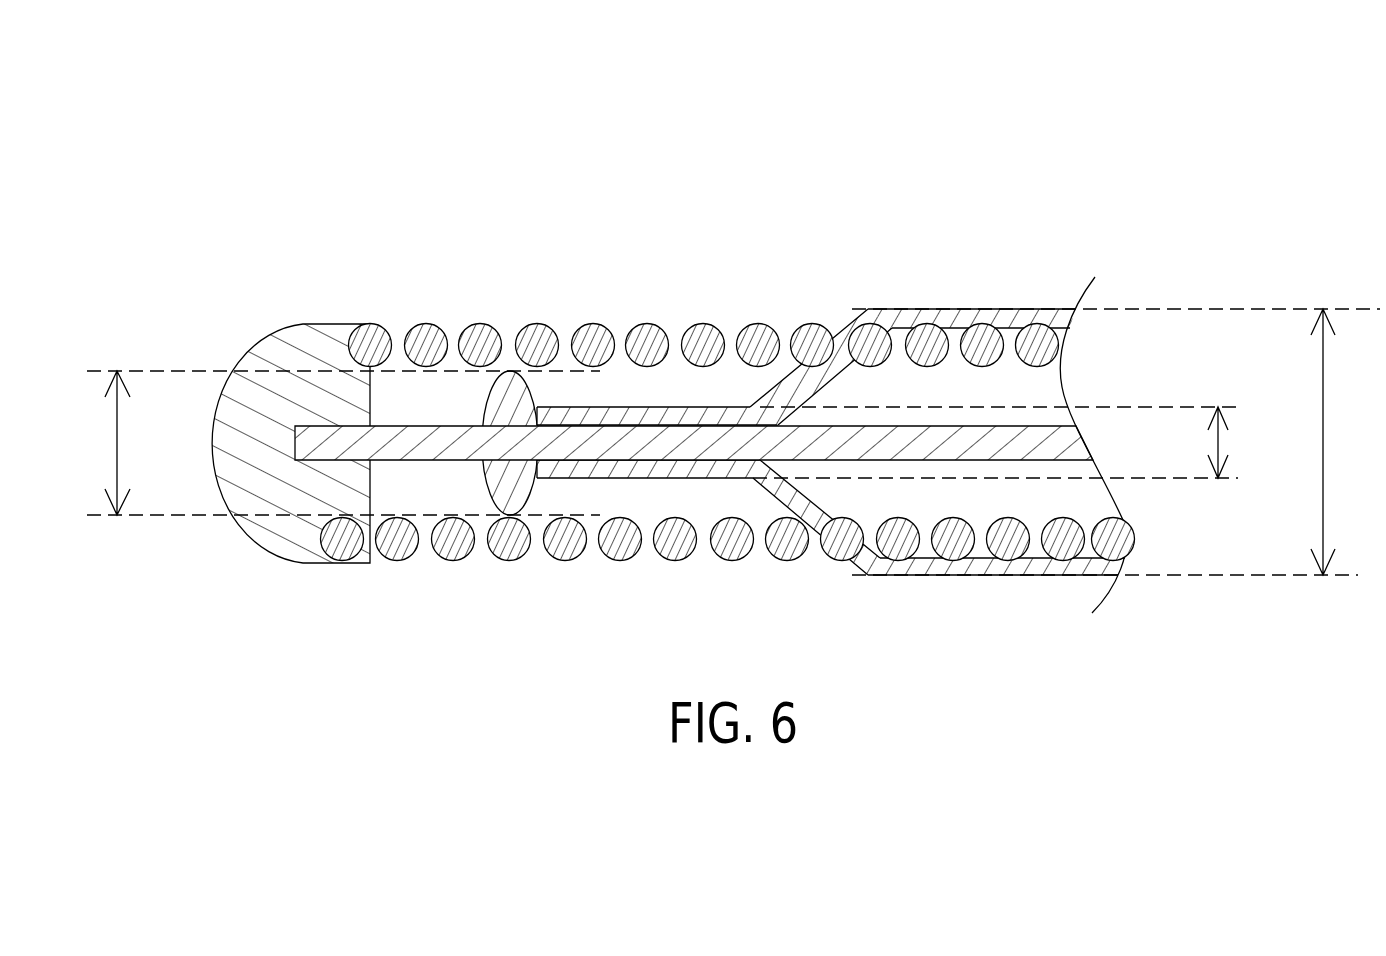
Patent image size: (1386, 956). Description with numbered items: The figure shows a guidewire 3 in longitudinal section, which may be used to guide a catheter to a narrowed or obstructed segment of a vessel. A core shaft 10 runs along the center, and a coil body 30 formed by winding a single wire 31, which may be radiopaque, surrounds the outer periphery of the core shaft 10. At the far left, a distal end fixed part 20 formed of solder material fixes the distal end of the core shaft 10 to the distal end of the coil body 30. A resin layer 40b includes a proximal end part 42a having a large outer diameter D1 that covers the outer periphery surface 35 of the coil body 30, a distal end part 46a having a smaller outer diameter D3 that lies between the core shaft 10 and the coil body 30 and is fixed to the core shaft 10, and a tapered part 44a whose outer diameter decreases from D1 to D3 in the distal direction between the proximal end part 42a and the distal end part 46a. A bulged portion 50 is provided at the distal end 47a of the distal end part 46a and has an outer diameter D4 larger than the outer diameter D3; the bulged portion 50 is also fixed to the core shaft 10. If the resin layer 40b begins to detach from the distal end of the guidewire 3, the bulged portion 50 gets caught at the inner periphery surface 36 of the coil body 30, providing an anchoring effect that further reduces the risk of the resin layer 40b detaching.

The guidewire 3 is at (438, 167).
The core shaft 10 is at (1068, 440).
The distal end fixed part 20 is at (262, 337).
The coil body 30 is at (789, 384).
The single wire 31 is at (1062, 350).
The outer periphery surface 35 is at (658, 330).
The inner periphery surface 36 is at (677, 517).
The resin layer 40b is at (1015, 308).
The proximal end part 42a is at (892, 308).
The tapered part 44a is at (784, 379).
The distal end part 46a is at (607, 407).
The distal end 47a is at (540, 400).
The bulged portion 50 is at (507, 385).
The outer diameter of bulged portion D4 is at (343, 443).
The outer diameter of distal end part D3 is at (1020, 442).
The outer diameter of proximal end part D1 is at (1116, 442).